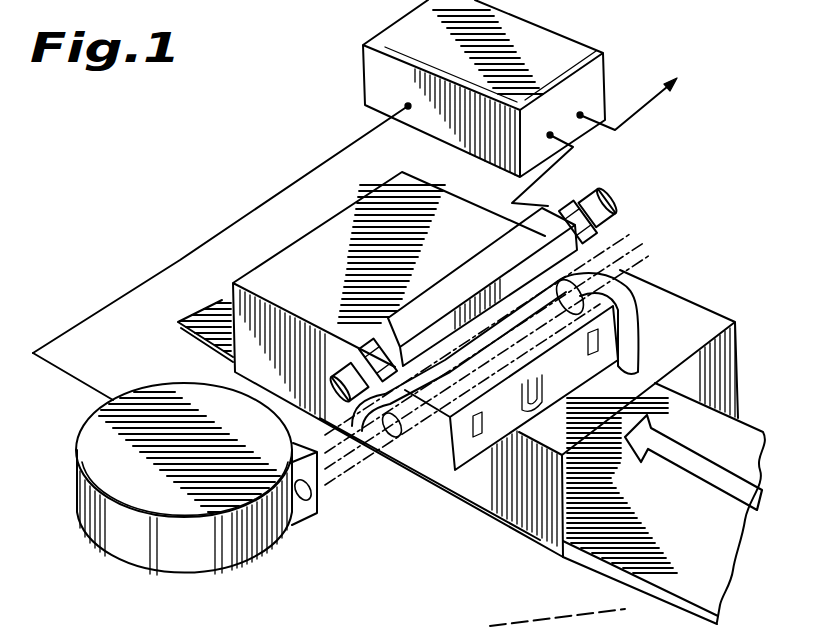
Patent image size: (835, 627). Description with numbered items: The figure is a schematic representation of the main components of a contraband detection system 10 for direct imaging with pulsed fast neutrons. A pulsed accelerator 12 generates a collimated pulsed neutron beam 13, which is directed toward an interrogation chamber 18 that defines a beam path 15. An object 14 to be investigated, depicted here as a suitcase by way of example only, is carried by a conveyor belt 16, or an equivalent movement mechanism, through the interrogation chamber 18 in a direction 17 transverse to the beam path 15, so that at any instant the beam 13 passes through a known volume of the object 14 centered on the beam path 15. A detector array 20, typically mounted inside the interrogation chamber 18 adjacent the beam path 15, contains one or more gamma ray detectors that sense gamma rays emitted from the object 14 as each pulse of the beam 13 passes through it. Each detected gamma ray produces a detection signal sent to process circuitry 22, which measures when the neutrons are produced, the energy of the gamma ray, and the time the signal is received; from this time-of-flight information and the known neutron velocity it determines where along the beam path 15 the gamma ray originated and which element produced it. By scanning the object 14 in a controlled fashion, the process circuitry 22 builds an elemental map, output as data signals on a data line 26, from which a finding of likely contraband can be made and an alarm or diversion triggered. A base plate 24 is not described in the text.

The contraband detection system 10 is at (230, 170).
The pulsed accelerator 12 is at (170, 390).
The collimated pulsed neutron beam 13 is at (340, 480).
The object 14 is at (430, 450).
The beam path 15 is at (637, 255).
The conveyor belt 16 is at (728, 585).
The direction 17 is at (703, 459).
The interrogation chamber 18 is at (700, 313).
The detector array 20 is at (442, 287).
The process circuitry 22 is at (582, 56).
The mounting plate 24 is at (325, 130).
The data line 26 is at (652, 103).